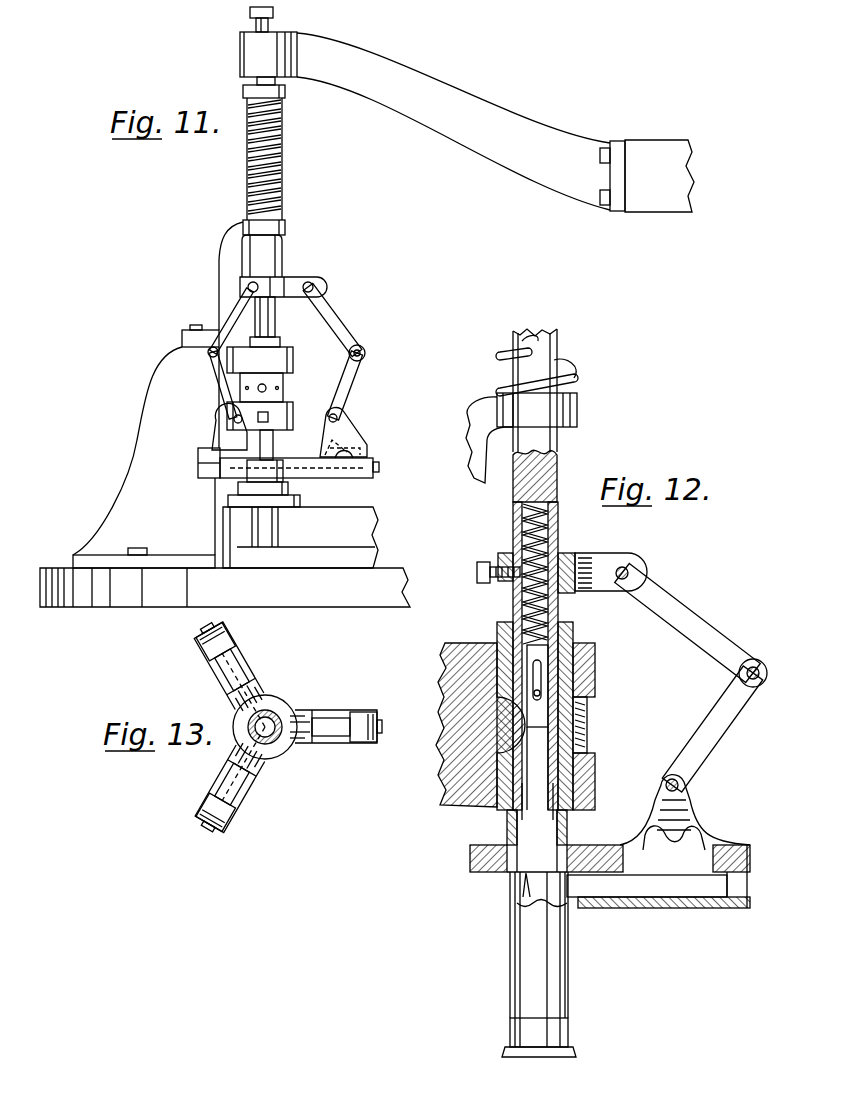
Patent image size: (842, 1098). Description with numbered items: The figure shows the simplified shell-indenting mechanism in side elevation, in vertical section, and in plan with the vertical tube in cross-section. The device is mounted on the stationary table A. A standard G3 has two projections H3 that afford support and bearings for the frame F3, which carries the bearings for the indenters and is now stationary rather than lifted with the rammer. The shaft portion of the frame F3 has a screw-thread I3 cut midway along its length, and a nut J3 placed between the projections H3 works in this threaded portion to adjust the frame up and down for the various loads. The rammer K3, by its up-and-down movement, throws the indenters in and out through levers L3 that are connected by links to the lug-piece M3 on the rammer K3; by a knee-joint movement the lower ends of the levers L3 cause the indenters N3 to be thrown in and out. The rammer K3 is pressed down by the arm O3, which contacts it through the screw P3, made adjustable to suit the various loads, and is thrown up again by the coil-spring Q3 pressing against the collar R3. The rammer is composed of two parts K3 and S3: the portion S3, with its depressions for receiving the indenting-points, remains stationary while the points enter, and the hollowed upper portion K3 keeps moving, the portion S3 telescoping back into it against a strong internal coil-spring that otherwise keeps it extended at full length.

In FIG. 11, the screw P3 is at (246, 20).
In FIG. 11, the arm O3 is at (495, 122).
In FIG. 11, the coil-spring Q3 is at (284, 160).
In FIG. 12, the coil-spring Q3 is at (547, 365).
In FIG. 11, the collar R3 is at (240, 222).
In FIG. 11, the rammer K3 is at (268, 254).
In FIG. 12, the rammer K3 is at (558, 454).
In FIG. 11, the lug-piece M3 is at (300, 284).
In FIG. 12, the lug-piece M3 is at (598, 560).
In FIG. 11, the projections H3 is at (285, 362).
In FIG. 12, the projections H3 is at (596, 661).
In FIG. 11, the nut J3 is at (284, 383).
In FIG. 12, the nut J3 is at (588, 708).
In FIG. 11, the screw-thread I3 is at (212, 370).
In FIG. 12, the screw-thread I3 is at (588, 724).
In FIG. 11, the levers L3 is at (350, 368).
In FIG. 12, the levers L3 is at (717, 728).
In FIG. 11, the frame F3 is at (307, 455).
In FIG. 13, the frame F3 is at (277, 694).
In FIG. 12, the frame F3 is at (733, 845).
In FIG. 11, the indenters N3 is at (379, 470).
In FIG. 13, the indenters N3 is at (212, 625).
In FIG. 12, the indenters N3 is at (622, 894).
In FIG. 11, the standard G3 is at (158, 395).
In FIG. 12, the standard G3 is at (443, 805).
In FIG. 11, the stationary table A is at (225, 587).
In FIG. 12, the rammer portion S3 is at (537, 853).